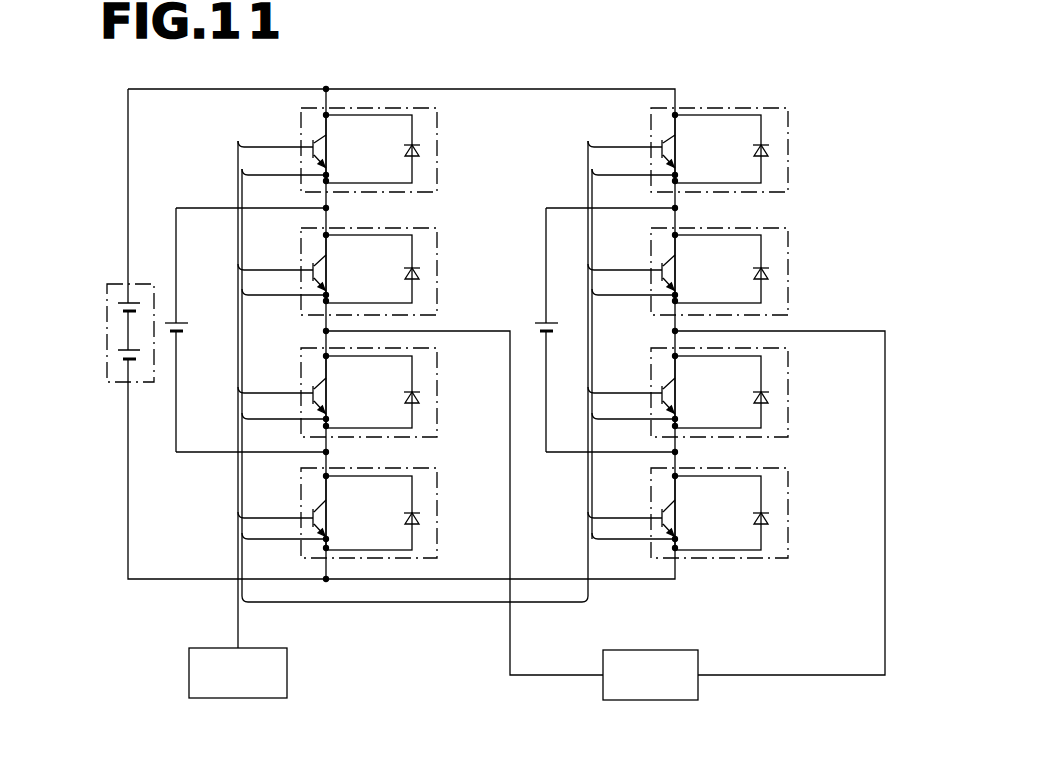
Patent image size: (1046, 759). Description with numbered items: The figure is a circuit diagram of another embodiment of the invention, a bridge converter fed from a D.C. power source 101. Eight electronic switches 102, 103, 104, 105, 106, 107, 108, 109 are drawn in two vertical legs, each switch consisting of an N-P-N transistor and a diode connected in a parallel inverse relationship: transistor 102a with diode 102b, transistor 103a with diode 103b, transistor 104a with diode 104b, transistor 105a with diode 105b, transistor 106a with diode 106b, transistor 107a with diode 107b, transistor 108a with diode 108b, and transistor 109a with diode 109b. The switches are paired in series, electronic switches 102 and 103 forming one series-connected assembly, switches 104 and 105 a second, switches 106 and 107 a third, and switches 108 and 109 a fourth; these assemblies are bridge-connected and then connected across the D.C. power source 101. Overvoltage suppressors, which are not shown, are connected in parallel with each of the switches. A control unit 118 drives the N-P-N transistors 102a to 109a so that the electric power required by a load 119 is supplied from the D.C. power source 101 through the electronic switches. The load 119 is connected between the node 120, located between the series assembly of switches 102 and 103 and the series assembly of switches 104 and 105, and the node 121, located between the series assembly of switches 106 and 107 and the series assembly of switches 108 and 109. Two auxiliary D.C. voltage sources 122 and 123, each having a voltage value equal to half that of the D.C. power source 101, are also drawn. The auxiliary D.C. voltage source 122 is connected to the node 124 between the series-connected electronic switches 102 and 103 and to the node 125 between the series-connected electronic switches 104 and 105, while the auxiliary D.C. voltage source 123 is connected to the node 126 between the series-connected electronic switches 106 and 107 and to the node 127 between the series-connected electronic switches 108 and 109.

The D.C. power source 101 is at (107, 303).
The electronic switch 102 is at (327, 147).
The N-P-N transistor 102a is at (321, 144).
The diode 102b is at (408, 153).
The electronic switch 103 is at (376, 271).
The N-P-N transistor 103a is at (321, 267).
The diode 103b is at (408, 276).
The electronic switch 104 is at (370, 392).
The N-P-N transistor 104a is at (321, 390).
The diode 104b is at (381, 409).
The electronic switch 105 is at (370, 513).
The N-P-N transistor 105a is at (321, 512).
The diode 105b is at (381, 530).
The electronic switch 106 is at (729, 150).
The N-P-N transistor 106a is at (670, 144).
The diode 106b is at (757, 153).
The electronic switch 107 is at (729, 271).
The N-P-N transistor 107a is at (670, 267).
The diode 107b is at (757, 276).
The electronic switch 108 is at (729, 392).
The N-P-N transistor 108a is at (670, 390).
The diode 108b is at (757, 400).
The electronic switch 109 is at (729, 513).
The N-P-N transistor 109a is at (670, 512).
The diode 109b is at (757, 520).
The control unit 118 is at (287, 666).
The load 119 is at (700, 683).
The node 120 is at (326, 331).
The node 121 is at (675, 331).
The auxiliary D.C. voltage source 122 is at (182, 332).
The auxiliary D.C. voltage source 123 is at (540, 334).
The node 124 is at (326, 208).
The node 125 is at (326, 452).
The node 126 is at (675, 208).
The node 127 is at (675, 452).